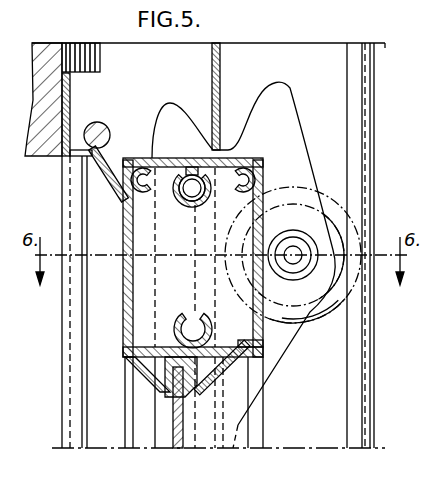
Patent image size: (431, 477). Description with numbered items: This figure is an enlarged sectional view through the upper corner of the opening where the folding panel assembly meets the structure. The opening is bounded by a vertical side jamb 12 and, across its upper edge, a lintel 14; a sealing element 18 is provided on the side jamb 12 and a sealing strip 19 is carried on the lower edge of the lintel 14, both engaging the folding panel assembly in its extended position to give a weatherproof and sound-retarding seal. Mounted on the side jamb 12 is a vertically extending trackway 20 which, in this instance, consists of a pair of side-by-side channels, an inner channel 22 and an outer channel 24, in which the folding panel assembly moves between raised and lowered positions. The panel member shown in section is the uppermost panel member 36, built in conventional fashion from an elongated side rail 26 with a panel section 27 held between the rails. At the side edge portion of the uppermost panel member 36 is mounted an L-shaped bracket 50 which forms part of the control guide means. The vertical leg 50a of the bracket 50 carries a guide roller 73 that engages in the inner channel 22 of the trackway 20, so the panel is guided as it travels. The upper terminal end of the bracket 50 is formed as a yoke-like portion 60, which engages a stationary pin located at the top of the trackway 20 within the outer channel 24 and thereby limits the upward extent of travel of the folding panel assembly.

The side jamb 12 is at (408, 100).
The lintel 14 is at (44, 43).
The sealing element 18 is at (111, 438).
The sealing strip 19 is at (114, 150).
The trackway 20 is at (375, 102).
The inner channel 22 is at (343, 428).
The outer channel 24 is at (182, 73).
The side rail 26 is at (163, 395).
The panel section 27 is at (175, 432).
The uppermost panel member 36 is at (264, 437).
The L-shaped bracket 50 is at (297, 130).
The vertical leg 50a is at (276, 352).
The yoke-like portion 60 is at (240, 148).
The guide roller 73 is at (323, 193).